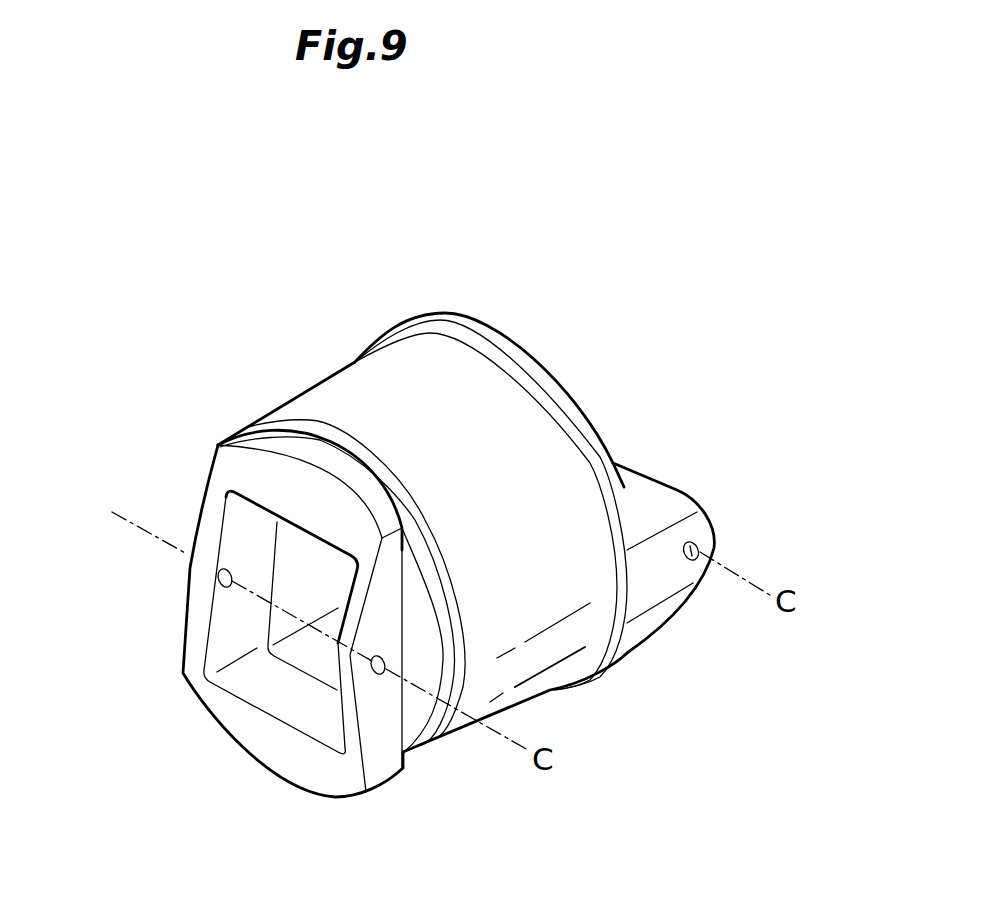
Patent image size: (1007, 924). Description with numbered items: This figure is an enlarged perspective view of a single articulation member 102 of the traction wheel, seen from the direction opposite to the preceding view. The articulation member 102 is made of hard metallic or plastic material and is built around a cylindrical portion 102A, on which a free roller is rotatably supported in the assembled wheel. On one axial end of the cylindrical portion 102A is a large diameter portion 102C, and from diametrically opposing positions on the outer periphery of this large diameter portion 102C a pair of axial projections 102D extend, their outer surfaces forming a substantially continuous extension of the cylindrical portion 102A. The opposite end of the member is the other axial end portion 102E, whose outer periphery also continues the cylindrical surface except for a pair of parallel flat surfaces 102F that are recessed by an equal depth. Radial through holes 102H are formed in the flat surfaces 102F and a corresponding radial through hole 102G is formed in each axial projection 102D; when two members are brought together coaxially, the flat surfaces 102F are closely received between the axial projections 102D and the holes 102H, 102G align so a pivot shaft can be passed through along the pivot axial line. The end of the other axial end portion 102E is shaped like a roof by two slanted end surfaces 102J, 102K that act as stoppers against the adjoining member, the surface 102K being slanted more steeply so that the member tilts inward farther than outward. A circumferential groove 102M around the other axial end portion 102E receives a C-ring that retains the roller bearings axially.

The articulation member 102 is at (569, 314).
The cylindrical portion 102A is at (557, 490).
The large diameter portion 102C is at (560, 380).
The axial projections 102D is at (660, 505).
The other axial end portion 102E is at (253, 437).
The flat surfaces 102F is at (213, 623).
The radial through hole 102G is at (700, 553).
The radial through holes 102H is at (220, 581).
The slanted end surface 102J is at (360, 722).
The slanted end surface 102K is at (372, 578).
The circumferential groove 102M is at (313, 433).